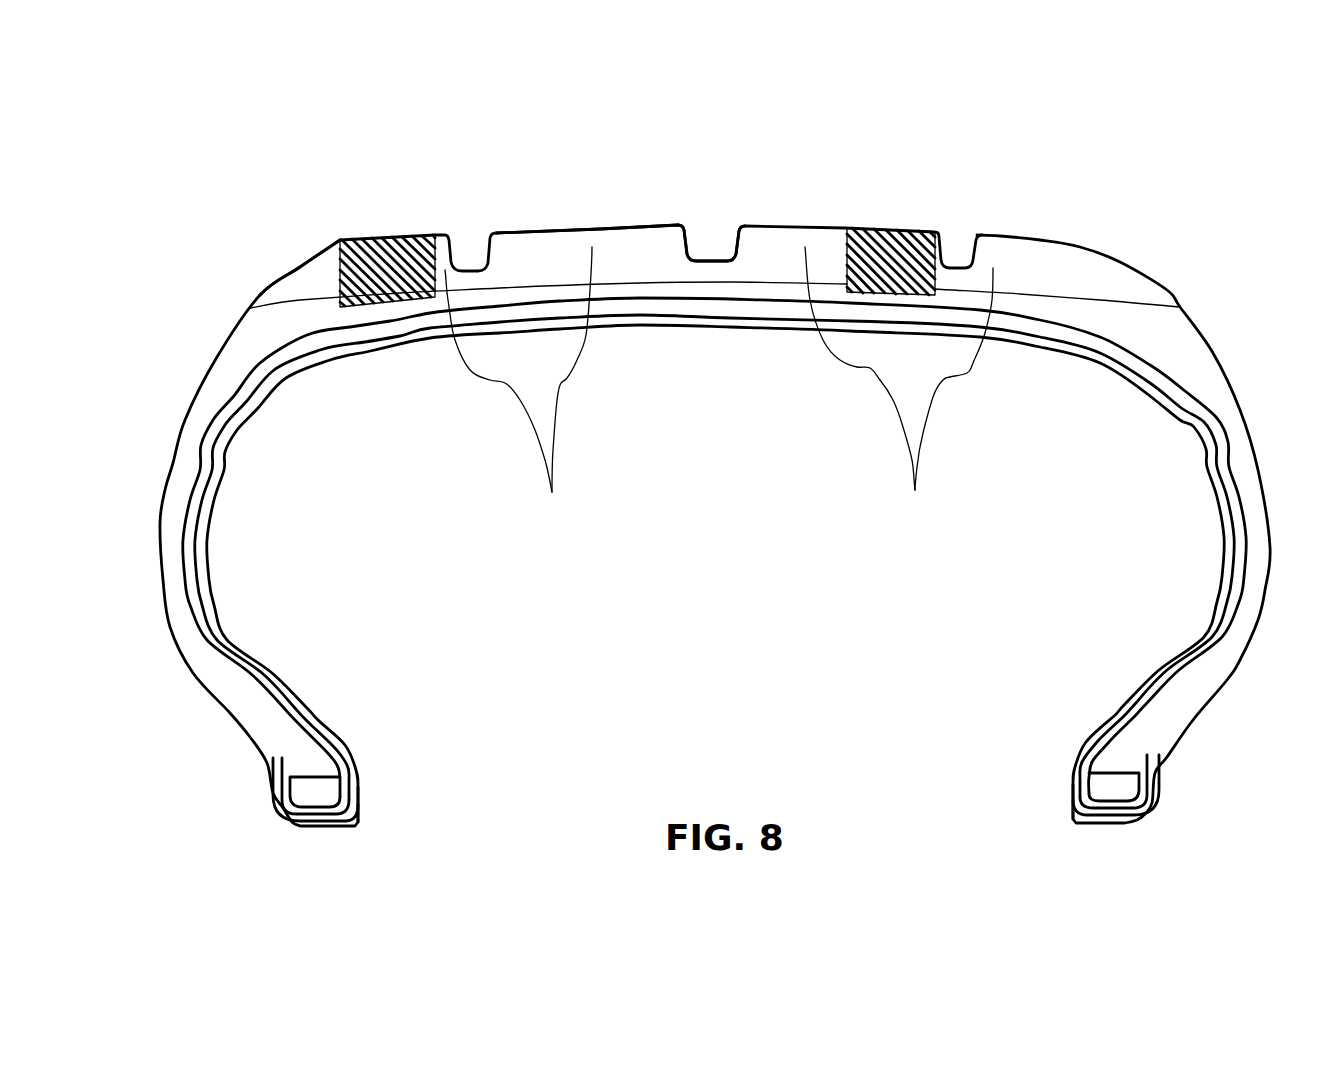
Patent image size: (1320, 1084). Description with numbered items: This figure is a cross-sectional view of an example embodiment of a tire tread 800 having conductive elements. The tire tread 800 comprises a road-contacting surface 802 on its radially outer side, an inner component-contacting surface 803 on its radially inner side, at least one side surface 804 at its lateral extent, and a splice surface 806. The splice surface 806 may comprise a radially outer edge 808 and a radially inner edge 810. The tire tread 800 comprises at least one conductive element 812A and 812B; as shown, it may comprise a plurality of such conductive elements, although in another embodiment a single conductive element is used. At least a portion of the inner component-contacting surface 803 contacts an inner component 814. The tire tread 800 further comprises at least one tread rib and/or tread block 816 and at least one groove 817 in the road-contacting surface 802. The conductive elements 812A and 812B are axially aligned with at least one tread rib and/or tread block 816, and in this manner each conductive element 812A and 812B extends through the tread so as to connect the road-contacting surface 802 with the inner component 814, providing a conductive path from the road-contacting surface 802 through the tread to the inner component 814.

The tire tread 800 is at (1095, 195).
The road-contacting surface 802 is at (792, 225).
The inner component-contacting surface 803 is at (1133, 303).
The side surface 804 is at (262, 296).
The splice surface 806 is at (535, 247).
The radially outer edge 808 is at (358, 247).
The radially inner edge 810 is at (332, 307).
The conductive element 812A is at (410, 258).
The conductive element 812B is at (903, 258).
The inner component 814 is at (1062, 308).
The tread rib and/or tread block 816 is at (719, 394).
The groove 817 is at (713, 232).